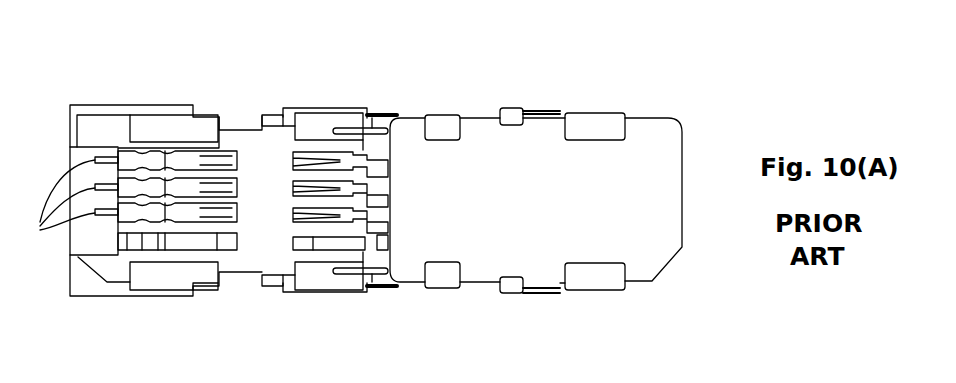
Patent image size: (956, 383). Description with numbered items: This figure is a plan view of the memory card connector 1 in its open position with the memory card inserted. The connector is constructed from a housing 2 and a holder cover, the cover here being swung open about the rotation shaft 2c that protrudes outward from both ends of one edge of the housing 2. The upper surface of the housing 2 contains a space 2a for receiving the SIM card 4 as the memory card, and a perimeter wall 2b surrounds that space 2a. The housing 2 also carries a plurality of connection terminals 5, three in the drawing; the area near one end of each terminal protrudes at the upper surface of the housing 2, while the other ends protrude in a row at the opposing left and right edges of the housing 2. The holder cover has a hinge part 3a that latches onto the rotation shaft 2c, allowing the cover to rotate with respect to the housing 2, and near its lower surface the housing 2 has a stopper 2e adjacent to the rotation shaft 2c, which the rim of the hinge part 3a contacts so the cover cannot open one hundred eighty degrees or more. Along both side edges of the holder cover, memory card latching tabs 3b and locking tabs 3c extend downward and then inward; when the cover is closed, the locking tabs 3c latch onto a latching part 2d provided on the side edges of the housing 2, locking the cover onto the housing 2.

The memory card connector 1 is at (656, 89).
The housing 2 is at (142, 297).
The space 2a is at (243, 133).
The perimeter wall 2b is at (330, 294).
The rotation shaft 2c is at (381, 110).
The latching part 2d is at (267, 112).
The stopper 2e is at (400, 118).
The hinge part 3a is at (393, 108).
The memory card latching tabs 3b is at (440, 122).
The locking tabs 3c is at (513, 113).
The SIM card 4 is at (683, 187).
The connection terminals 5 is at (201, 200).